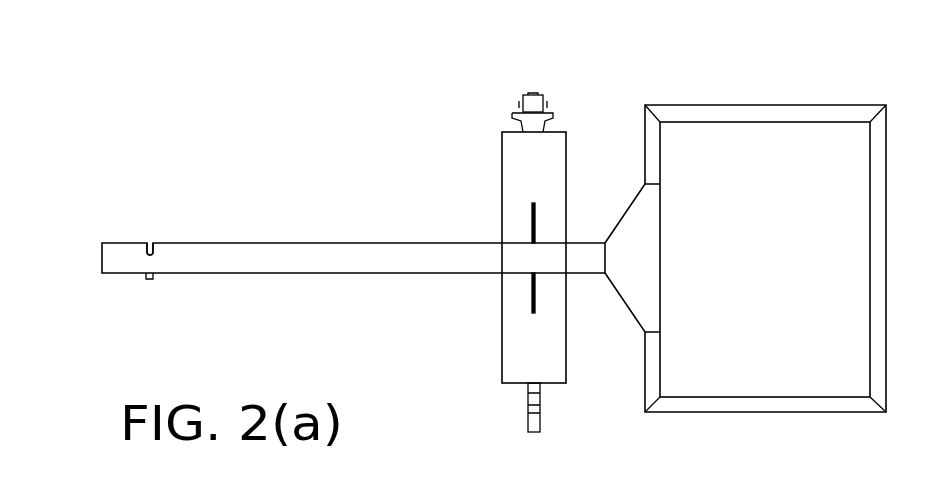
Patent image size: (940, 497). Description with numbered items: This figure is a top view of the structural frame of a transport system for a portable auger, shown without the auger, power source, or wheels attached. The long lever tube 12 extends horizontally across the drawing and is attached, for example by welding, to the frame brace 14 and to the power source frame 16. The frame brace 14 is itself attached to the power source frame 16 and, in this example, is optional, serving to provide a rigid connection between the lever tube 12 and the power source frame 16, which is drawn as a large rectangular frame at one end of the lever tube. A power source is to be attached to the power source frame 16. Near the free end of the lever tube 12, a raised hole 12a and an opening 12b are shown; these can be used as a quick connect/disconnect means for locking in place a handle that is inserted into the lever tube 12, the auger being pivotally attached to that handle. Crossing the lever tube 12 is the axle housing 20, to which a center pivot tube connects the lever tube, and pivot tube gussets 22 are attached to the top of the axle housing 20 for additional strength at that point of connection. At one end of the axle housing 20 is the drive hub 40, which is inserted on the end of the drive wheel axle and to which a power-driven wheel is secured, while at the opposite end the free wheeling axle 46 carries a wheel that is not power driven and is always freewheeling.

The lever tube 12 is at (270, 253).
The raised hole 12a is at (152, 279).
The opening 12b is at (150, 242).
The frame brace 14 is at (629, 277).
The power source frame 16 is at (700, 397).
The axle housing 20 is at (512, 150).
The pivot tube gussets 22 is at (532, 222).
The drive hub 40 is at (520, 126).
The free wheeling axle 46 is at (530, 410).